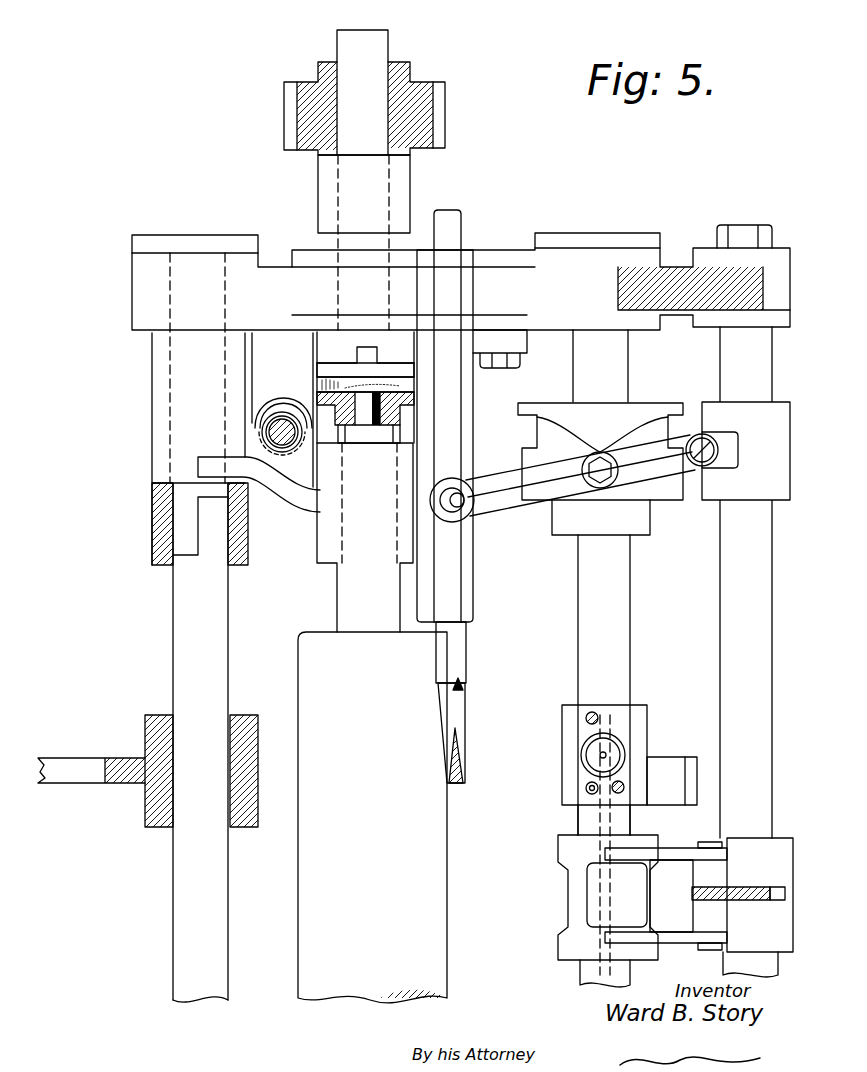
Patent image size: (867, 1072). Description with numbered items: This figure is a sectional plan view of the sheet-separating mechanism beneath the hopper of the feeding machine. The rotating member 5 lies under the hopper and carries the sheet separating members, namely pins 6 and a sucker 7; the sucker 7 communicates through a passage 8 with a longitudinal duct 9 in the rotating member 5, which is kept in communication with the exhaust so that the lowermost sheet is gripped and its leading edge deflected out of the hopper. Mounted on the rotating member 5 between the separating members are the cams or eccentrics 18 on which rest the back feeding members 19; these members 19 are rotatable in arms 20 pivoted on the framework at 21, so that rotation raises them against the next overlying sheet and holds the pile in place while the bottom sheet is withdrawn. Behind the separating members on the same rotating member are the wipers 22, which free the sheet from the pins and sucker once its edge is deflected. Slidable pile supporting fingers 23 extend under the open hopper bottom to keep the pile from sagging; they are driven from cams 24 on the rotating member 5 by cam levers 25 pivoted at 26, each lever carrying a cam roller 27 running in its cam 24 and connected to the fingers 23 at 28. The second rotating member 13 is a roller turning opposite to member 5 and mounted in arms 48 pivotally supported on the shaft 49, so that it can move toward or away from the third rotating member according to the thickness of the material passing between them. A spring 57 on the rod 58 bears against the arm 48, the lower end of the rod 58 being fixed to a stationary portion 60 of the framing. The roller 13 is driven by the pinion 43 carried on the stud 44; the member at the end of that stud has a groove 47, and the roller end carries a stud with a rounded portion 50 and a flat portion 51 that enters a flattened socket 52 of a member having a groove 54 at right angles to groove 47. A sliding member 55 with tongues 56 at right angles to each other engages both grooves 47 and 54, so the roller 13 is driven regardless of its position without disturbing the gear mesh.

The pinion 43 is at (438, 120).
The stud 44 is at (400, 193).
The groove 47 is at (355, 355).
The tongues 56 is at (363, 347).
The sliding member 55 is at (390, 370).
The groove 54 is at (408, 378).
The rounded portion 50 is at (373, 410).
The flat portion 51 is at (368, 435).
The flattened socket 52 is at (337, 437).
The stationary portion of the framing 60 is at (279, 410).
The rod 58 is at (267, 425).
The spring 57 is at (267, 433).
The arms 48 is at (292, 510).
The shaft 49 is at (148, 627).
The connection 28 is at (452, 505).
The slidable pile supporting fingers 23 is at (458, 706).
The second rotating member 13 is at (372, 817).
The rotating member 5 is at (612, 648).
The cams 24 is at (545, 410).
The cam levers 25 is at (503, 503).
The cam roller 27 is at (580, 500).
The pivot 26 is at (698, 468).
The passage 8 is at (600, 754).
The sucker 7 is at (583, 767).
The pins 6 is at (587, 789).
The longitudinal duct 9 is at (598, 820).
The wipers 22 is at (672, 757).
The cams or eccentrics 18 is at (572, 890).
The back feeding members 19 is at (617, 895).
The arms 20 is at (695, 895).
The pivot 21 is at (717, 845).